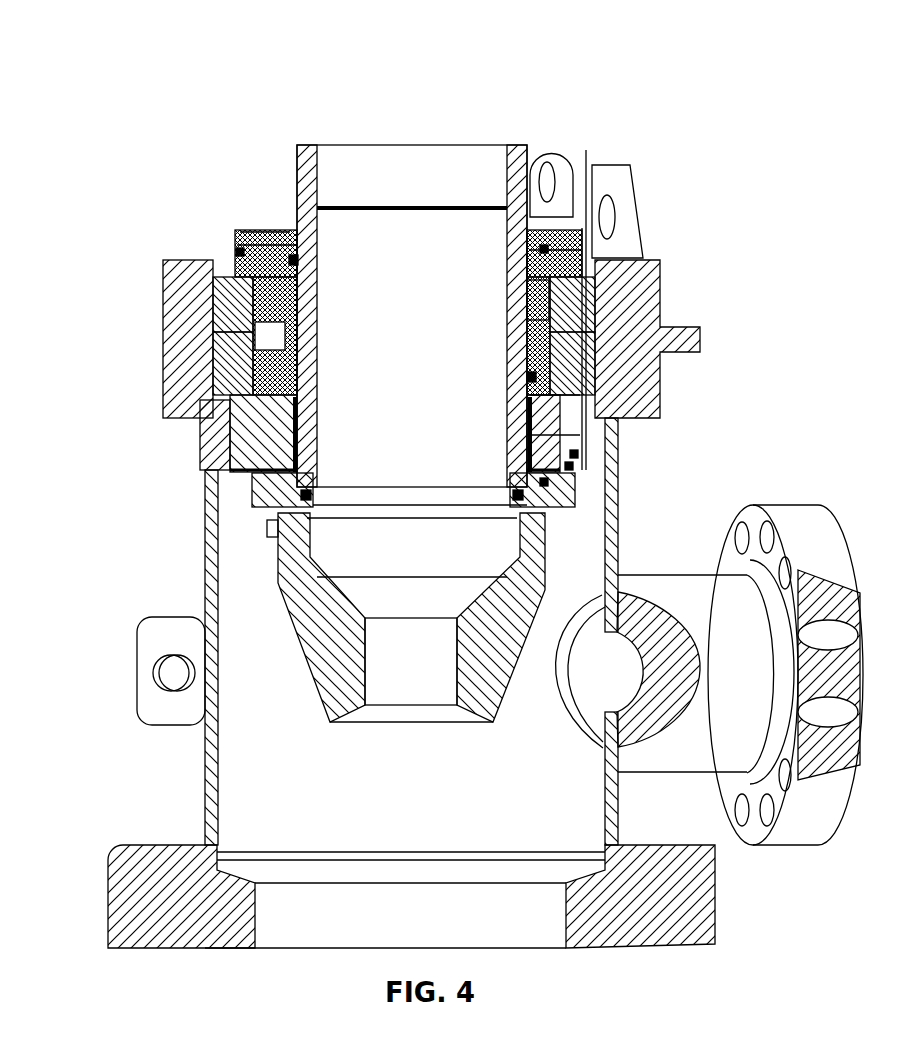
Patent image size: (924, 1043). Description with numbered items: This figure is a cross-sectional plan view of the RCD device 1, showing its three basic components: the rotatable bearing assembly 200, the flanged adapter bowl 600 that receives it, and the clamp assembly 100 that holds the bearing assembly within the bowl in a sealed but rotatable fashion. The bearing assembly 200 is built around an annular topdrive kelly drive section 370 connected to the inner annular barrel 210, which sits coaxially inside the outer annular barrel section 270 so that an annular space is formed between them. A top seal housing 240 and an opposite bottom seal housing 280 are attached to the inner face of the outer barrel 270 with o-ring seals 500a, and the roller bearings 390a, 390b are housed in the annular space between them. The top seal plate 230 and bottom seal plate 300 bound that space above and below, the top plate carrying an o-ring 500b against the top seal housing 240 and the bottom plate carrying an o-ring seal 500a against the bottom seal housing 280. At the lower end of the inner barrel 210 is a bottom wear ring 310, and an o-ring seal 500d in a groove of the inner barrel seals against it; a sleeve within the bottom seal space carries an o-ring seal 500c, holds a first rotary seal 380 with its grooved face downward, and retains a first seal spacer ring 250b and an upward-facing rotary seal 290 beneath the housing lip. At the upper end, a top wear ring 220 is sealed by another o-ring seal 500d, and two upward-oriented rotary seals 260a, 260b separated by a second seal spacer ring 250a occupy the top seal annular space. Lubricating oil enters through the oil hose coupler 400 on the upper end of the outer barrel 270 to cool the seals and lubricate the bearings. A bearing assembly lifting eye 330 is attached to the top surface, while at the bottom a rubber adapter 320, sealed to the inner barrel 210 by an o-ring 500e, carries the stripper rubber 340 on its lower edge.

The RCD device 1 is at (150, 72).
The clamp assembly 100 is at (161, 285).
The bearing assembly 200 is at (347, 135).
The inner annular barrel 210 is at (291, 207).
The top wear ring 220 is at (546, 228).
The top seal plate 230 is at (258, 220).
The top seal housing 240 is at (236, 236).
The second seal spacer ring 250a is at (526, 253).
The first seal spacer ring 250b is at (524, 406).
The rotary seal 260a is at (524, 235).
The rotary seal 260b is at (299, 258).
The outer annular barrel section 270 is at (232, 262).
The bottom seal housing 280 is at (228, 415).
The rotary seal 290 is at (524, 394).
The bottom seal plate 300 is at (228, 470).
The bottom wear ring 310 is at (524, 436).
The rubber adapter 320 is at (250, 492).
The bearing assembly lifting eye 330 is at (546, 150).
The stripper rubber 340 is at (310, 665).
The annular topdrive kelly drive section 370 is at (292, 157).
The first rotary seal 380 is at (524, 462).
The roller bearing 390a is at (212, 325).
The roller bearing 390b is at (212, 358).
The oil hose coupler 400 is at (586, 200).
The o-ring seal 500a is at (245, 249).
The o-ring 500b is at (540, 246).
The o-ring seal 500c is at (580, 466).
The annular o-ring seal 500d is at (232, 266).
The o-ring 500e is at (495, 499).
The flanged adapter bowl 600 is at (204, 550).